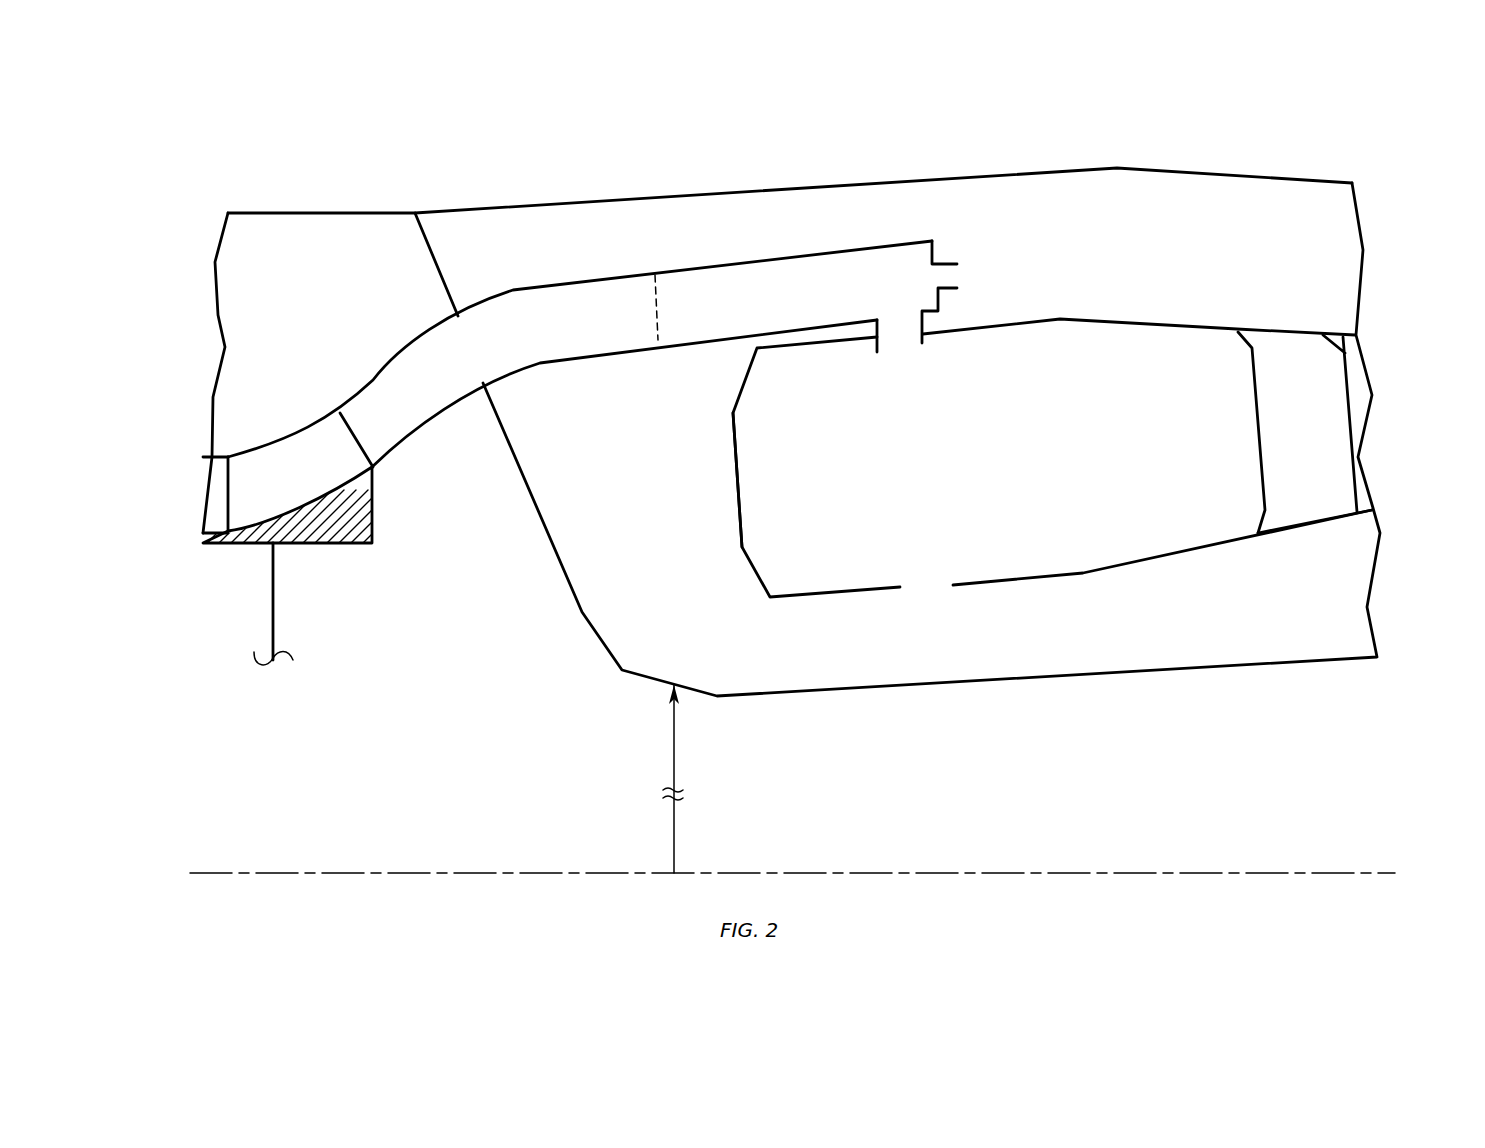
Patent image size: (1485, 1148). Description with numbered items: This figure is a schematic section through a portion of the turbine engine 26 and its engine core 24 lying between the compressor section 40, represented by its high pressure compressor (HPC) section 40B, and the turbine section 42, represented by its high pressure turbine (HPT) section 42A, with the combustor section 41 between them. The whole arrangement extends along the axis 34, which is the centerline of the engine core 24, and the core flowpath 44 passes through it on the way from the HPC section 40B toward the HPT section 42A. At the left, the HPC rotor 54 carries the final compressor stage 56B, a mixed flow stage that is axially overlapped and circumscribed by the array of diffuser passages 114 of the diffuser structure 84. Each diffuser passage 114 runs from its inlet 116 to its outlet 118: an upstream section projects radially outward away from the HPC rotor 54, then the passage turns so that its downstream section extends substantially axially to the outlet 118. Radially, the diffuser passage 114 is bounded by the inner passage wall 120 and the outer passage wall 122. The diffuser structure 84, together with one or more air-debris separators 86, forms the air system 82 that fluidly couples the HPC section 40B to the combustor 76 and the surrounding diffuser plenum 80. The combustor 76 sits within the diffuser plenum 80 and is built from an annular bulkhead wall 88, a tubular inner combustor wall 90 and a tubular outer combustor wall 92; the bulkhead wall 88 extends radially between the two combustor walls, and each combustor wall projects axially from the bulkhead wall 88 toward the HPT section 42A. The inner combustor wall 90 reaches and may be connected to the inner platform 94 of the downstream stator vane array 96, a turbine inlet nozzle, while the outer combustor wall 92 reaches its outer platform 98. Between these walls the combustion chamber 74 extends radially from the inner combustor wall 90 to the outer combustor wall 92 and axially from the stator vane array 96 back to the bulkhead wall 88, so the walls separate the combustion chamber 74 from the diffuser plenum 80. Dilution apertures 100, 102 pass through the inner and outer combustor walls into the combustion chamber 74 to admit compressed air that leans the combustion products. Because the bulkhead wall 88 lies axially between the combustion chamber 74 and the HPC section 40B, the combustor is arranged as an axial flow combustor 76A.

The engine core 24 is at (190, 96).
The turbine engine 26 is at (253, 130).
The axis 34 is at (228, 875).
The compressor section 40 is at (168, 373).
The high pressure compressor (HPC) section 40B is at (238, 348).
The combustor section 41 is at (978, 128).
The turbine section 42 is at (1399, 277).
The high pressure turbine (HPT) section 42A is at (1330, 305).
The core flowpath 44 is at (205, 500).
The high pressure compressor (HPC) rotor 54 is at (260, 612).
The final compressor stage 56B is at (280, 440).
The combustion chamber 74 is at (1013, 476).
The combustor 76 is at (1226, 274).
The axial flow combustor 76A is at (1168, 312).
The diffuser plenum 80 is at (1121, 257).
The air system 82 is at (720, 228).
The diffuser structure 84 is at (567, 354).
The air-debris separator 86 is at (840, 250).
The combustor bulkhead wall 88 is at (735, 463).
The inner combustor wall 90 is at (987, 580).
The outer combustor wall 92 is at (1010, 325).
The inner platform 94 is at (1335, 515).
The stator vane array 96 is at (1280, 330).
The outer platform 98 is at (1338, 345).
The dilution aperture 100 is at (953, 585).
The dilution aperture 102 is at (922, 343).
The diffuser passage 114 is at (468, 377).
The diffuser passage inlet 116 is at (347, 435).
The diffuser passage outlet 118 is at (660, 330).
The inner passage wall 120 is at (507, 370).
The outer passage wall 122 is at (497, 302).